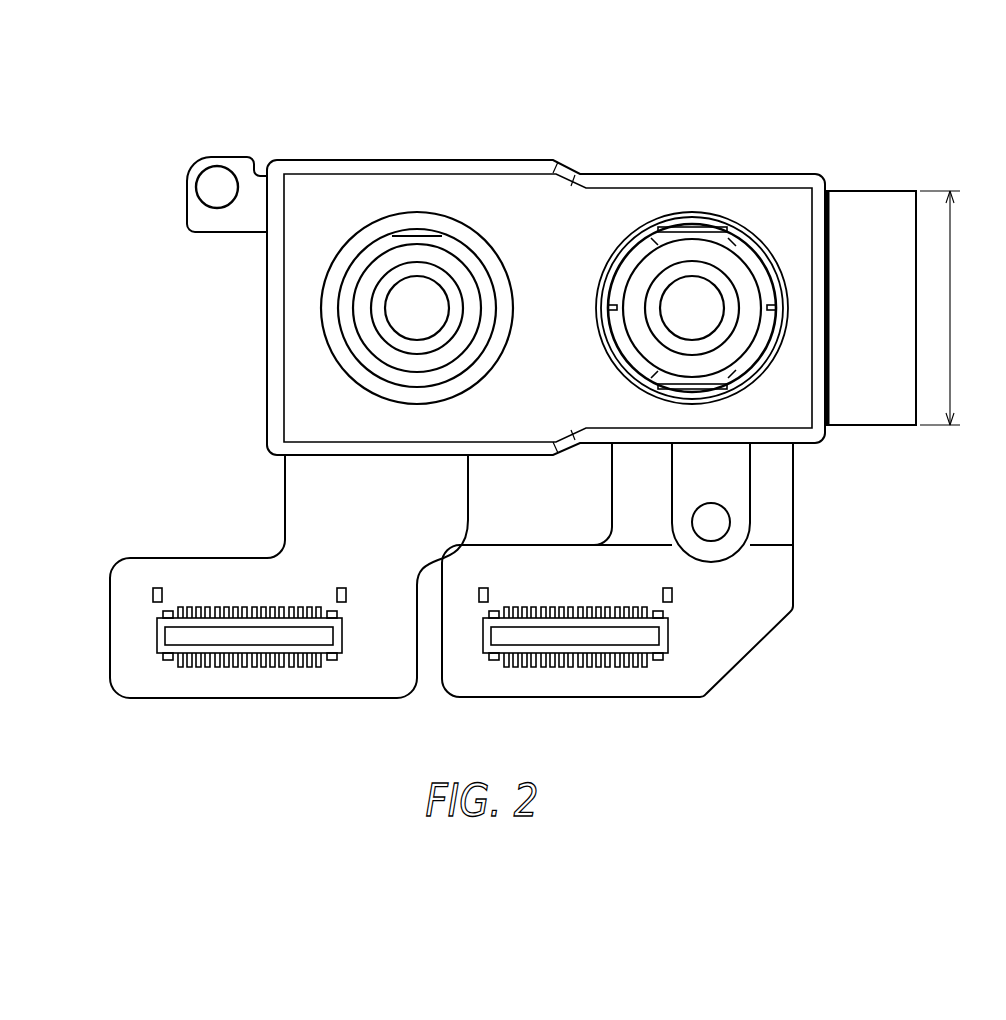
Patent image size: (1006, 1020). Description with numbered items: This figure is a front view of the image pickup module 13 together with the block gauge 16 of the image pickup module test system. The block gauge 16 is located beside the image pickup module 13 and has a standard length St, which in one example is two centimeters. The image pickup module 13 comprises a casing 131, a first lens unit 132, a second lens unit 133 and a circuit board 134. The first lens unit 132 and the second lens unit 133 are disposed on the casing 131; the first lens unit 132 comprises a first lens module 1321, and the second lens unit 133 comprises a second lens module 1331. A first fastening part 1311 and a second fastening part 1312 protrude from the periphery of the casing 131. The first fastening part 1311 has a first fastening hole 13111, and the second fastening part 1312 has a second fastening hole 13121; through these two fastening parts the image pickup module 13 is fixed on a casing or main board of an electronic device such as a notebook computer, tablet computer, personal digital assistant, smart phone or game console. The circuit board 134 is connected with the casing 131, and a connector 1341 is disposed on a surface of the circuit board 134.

The image pickup module 13 is at (52, 73).
The casing 131 is at (790, 417).
The first fastening part 1311 is at (752, 492).
The first fastening hole 13111 is at (713, 515).
The second fastening part 1312 is at (203, 160).
The second fastening hole 13121 is at (211, 183).
The first lens unit 132 is at (691, 212).
The first lens module 1321 is at (719, 278).
The second lens unit 133 is at (414, 212).
The second lens module 1331 is at (438, 280).
The circuit board 134 is at (365, 670).
The connector 1341 is at (240, 668).
The block gauge 16 is at (870, 205).
The standard length St is at (951, 308).